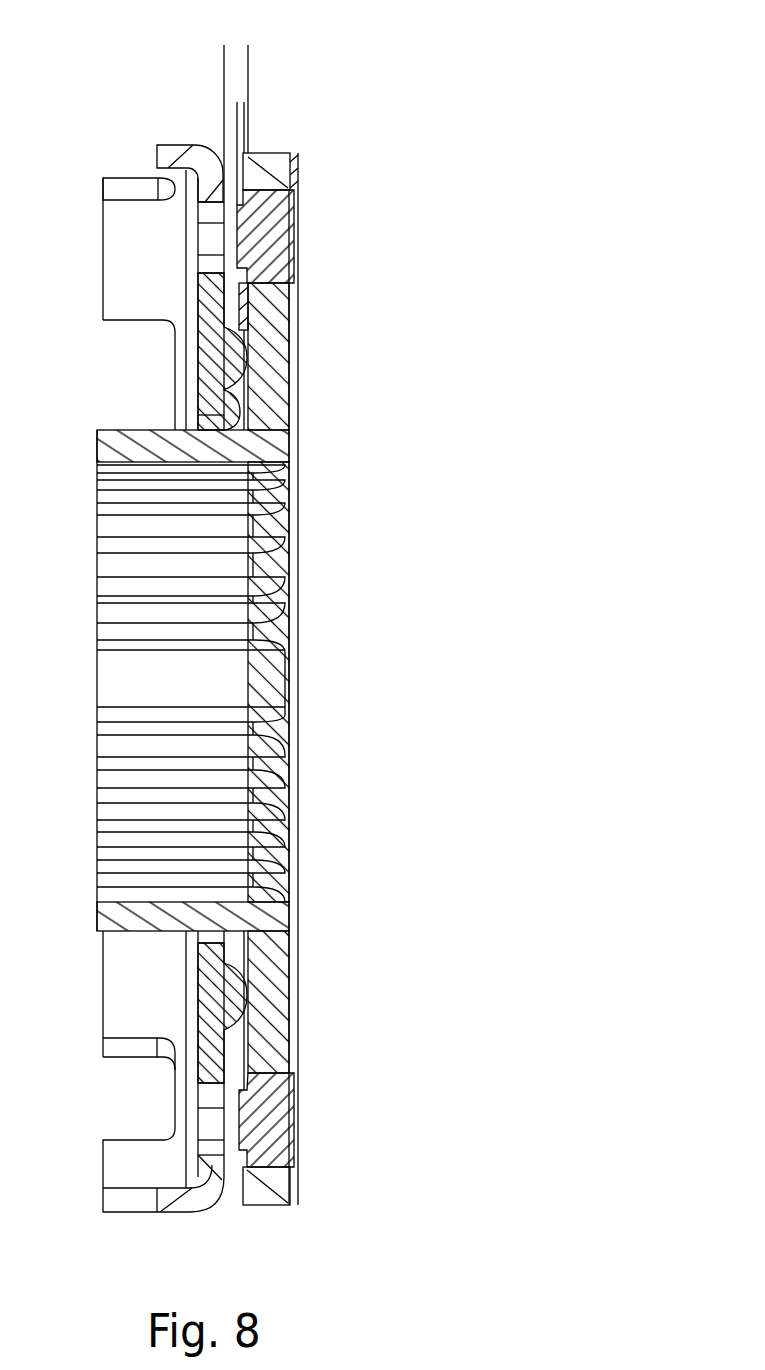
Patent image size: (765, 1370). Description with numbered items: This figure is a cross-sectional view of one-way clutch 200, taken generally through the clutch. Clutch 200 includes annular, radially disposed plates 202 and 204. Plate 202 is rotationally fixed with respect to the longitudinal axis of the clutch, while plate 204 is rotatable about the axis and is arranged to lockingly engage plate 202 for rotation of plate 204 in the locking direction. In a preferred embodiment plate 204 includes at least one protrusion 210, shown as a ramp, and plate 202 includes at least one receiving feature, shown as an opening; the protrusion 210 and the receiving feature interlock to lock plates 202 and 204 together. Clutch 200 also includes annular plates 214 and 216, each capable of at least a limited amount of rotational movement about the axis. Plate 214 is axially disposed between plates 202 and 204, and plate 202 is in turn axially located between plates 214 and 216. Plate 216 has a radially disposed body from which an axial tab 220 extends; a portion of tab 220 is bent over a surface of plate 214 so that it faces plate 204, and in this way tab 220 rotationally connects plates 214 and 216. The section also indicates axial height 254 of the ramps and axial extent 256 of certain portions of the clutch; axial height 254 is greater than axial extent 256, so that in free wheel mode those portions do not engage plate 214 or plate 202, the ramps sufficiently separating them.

The one-way clutch 200 is at (574, 111).
The plate 202 is at (273, 397).
The plate 204 is at (157, 155).
The protrusion 210 is at (212, 362).
The plate 214 is at (243, 1198).
The plate 216 is at (298, 181).
The tab 220 is at (273, 237).
The axial height 254 is at (180, 69).
The axial extent 256 is at (193, 125).